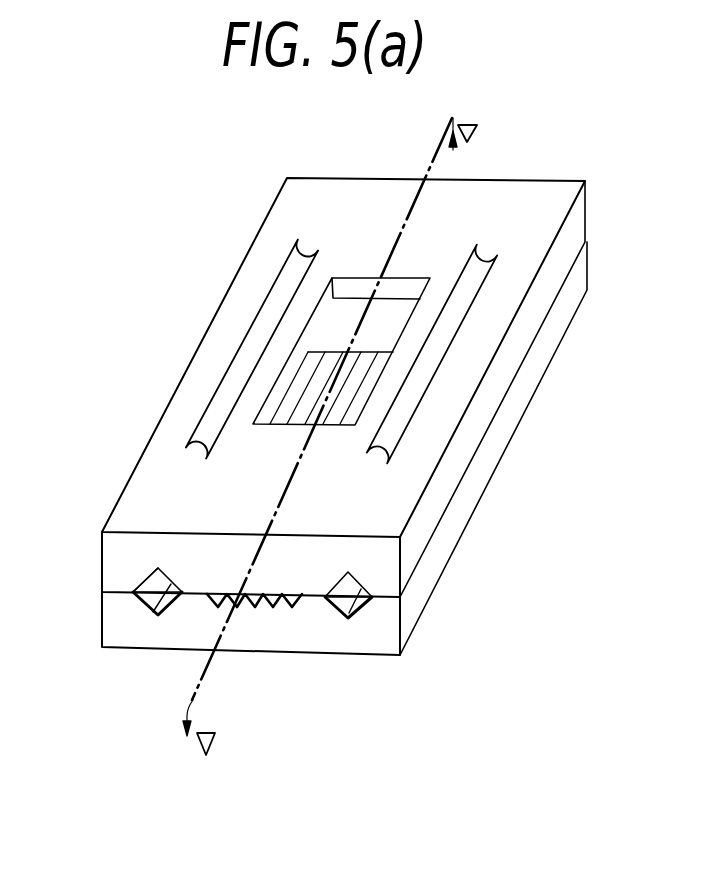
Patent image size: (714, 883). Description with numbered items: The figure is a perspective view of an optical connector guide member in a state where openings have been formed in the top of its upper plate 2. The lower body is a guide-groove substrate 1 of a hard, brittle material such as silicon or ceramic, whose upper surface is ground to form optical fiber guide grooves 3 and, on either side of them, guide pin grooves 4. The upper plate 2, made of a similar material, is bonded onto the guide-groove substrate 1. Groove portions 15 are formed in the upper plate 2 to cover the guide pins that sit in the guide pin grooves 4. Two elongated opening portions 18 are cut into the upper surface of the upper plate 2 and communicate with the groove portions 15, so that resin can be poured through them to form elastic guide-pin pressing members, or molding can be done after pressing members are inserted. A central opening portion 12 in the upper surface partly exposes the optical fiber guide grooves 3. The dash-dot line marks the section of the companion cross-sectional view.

The guide-groove substrate 1 is at (337, 638).
The upper plate 2 is at (378, 560).
The optical fiber guide grooves 3 is at (266, 600).
The guide pin grooves 4 is at (154, 612).
The opening portion 12 is at (390, 312).
The groove portions 15 is at (148, 582).
The opening portions 18 is at (457, 313).